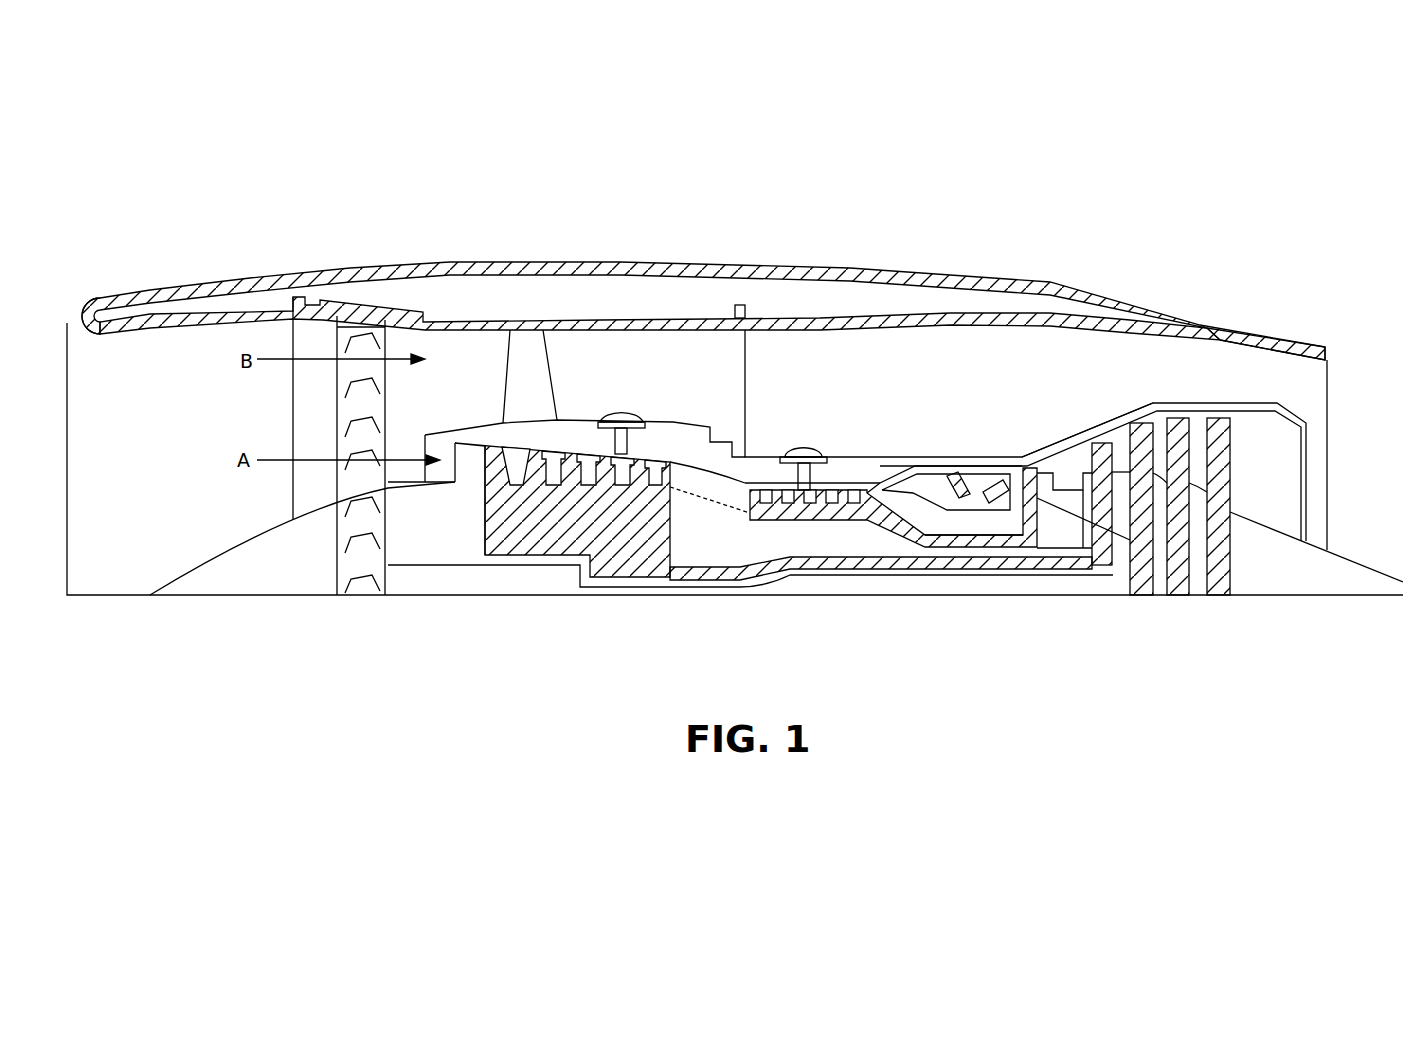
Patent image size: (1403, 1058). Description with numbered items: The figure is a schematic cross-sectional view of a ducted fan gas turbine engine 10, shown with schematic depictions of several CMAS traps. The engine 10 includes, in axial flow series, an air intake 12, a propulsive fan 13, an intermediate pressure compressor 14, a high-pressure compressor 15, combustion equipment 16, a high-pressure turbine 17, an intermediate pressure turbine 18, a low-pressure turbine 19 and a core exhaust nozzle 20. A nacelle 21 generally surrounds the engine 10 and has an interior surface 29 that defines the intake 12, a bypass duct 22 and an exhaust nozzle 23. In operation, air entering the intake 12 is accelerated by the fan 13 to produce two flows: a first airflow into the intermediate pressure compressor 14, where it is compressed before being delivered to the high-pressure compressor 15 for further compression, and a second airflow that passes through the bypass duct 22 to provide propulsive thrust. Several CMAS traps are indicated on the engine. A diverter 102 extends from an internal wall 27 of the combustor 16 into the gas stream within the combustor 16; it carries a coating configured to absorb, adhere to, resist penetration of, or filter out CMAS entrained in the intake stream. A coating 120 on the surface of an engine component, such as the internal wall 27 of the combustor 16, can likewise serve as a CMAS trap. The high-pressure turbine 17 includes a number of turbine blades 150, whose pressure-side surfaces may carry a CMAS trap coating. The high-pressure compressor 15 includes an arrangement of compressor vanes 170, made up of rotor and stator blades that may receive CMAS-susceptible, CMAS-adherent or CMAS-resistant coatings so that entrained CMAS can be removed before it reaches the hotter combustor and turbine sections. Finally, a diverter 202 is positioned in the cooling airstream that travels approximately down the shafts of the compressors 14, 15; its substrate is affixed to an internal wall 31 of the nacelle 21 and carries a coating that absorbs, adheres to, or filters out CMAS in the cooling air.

The gas turbine engine 10 is at (173, 626).
The air intake 12 is at (173, 334).
The propulsive fan 13 is at (336, 392).
The intermediate pressure compressor 14 is at (485, 465).
The high-pressure compressor 15 is at (712, 462).
The combustion equipment 16 is at (928, 461).
The high-pressure turbine 17 is at (1052, 467).
The intermediate pressure turbine 18 is at (1093, 442).
The low-pressure turbine 19 is at (1233, 488).
The core exhaust nozzle 20 is at (1298, 417).
The nacelle 21 is at (154, 272).
The bypass duct 22 is at (566, 406).
The exhaust nozzle 23 is at (1277, 335).
The internal wall 27 is at (1003, 470).
The interior surface 29 is at (603, 318).
The internal wall 31 is at (827, 570).
The diverter 102 is at (945, 510).
The coating 120 is at (993, 498).
The turbine blades 150 is at (1153, 578).
The compressor vanes 170 is at (783, 505).
The diverter 202 is at (972, 495).